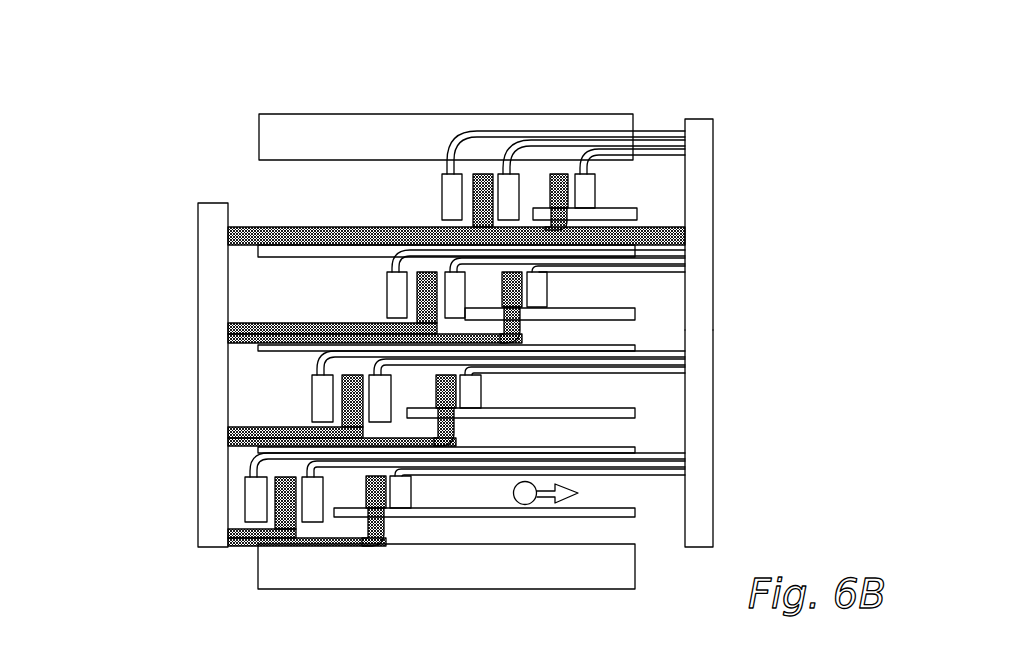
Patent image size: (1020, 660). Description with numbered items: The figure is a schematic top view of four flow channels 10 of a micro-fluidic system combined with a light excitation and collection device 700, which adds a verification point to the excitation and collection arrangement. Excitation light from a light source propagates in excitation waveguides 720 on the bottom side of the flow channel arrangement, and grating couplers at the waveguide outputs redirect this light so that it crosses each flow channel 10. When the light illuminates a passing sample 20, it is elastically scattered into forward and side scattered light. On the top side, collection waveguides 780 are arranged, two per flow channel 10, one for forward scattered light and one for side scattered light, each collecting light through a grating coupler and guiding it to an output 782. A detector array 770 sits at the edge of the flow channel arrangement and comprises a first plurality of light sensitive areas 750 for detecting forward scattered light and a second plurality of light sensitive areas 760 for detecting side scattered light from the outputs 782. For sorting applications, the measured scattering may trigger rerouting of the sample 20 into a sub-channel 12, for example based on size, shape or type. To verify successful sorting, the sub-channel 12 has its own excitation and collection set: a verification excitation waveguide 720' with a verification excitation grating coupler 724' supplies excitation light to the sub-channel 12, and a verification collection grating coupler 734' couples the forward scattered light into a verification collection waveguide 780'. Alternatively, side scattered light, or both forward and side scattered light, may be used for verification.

The light excitation and collection device 700 is at (213, 140).
The flow channel 10 is at (290, 198).
The output of the collection waveguide 782 is at (677, 135).
The detector array 770 is at (697, 497).
The sub-channel 12 is at (613, 185).
The collection waveguide 780 is at (540, 111).
The verification collection waveguide 780' is at (702, 169).
The verification excitation grating coupler 724' is at (614, 131).
The verification collection grating coupler 734' is at (699, 208).
The verification excitation waveguide 720' is at (525, 258).
The second plurality of light sensitive areas 760 is at (685, 246).
The first plurality of light sensitive areas 750 is at (687, 254).
The excitation waveguide 720 is at (265, 581).
The sample 20 is at (532, 505).